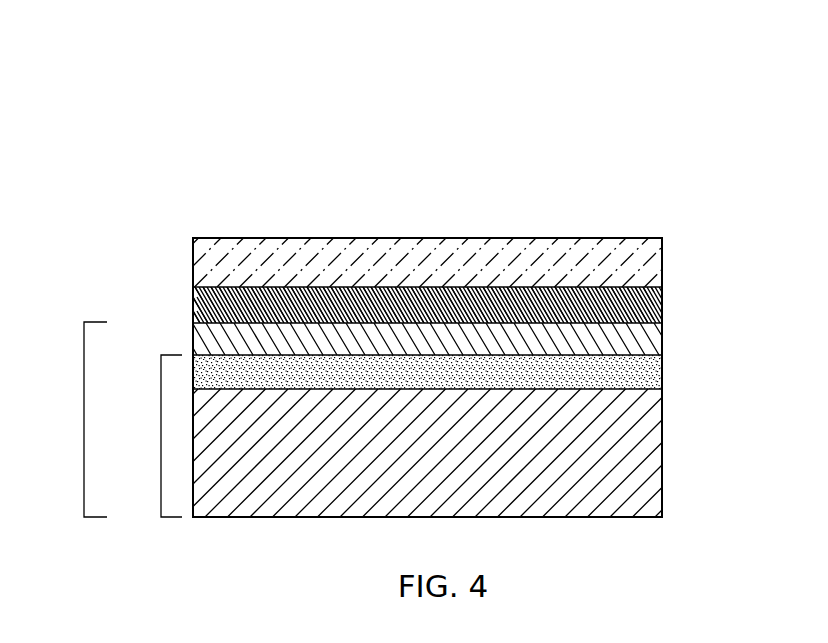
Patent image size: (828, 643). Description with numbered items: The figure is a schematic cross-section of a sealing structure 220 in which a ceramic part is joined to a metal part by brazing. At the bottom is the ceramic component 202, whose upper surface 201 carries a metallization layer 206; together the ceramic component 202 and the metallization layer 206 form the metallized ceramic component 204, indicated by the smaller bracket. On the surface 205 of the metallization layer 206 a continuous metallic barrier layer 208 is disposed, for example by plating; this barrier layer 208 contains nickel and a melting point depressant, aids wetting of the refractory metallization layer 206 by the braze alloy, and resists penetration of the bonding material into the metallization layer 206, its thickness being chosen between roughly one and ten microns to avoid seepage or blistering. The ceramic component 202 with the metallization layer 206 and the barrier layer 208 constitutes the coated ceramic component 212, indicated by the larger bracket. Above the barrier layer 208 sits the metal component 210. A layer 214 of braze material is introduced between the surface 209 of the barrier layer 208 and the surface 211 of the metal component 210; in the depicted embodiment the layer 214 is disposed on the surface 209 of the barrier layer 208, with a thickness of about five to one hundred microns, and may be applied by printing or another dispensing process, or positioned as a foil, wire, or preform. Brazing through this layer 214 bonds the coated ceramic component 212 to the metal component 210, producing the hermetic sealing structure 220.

The sealing structure 220 is at (668, 73).
The metal component 210 is at (652, 265).
The surface of the metallic barrier layer 209 is at (224, 287).
The surface of the metal component 211 is at (663, 298).
The layer of braze material 214 is at (662, 322).
The metallic barrier layer 208 is at (655, 347).
The surface of the metallization layer 205 is at (193, 328).
The surface of the ceramic component 201 is at (193, 355).
The metallization layer 206 is at (662, 380).
The ceramic component 202 is at (655, 436).
The metallized ceramic component 204 is at (161, 418).
The coated ceramic component 212 is at (84, 418).